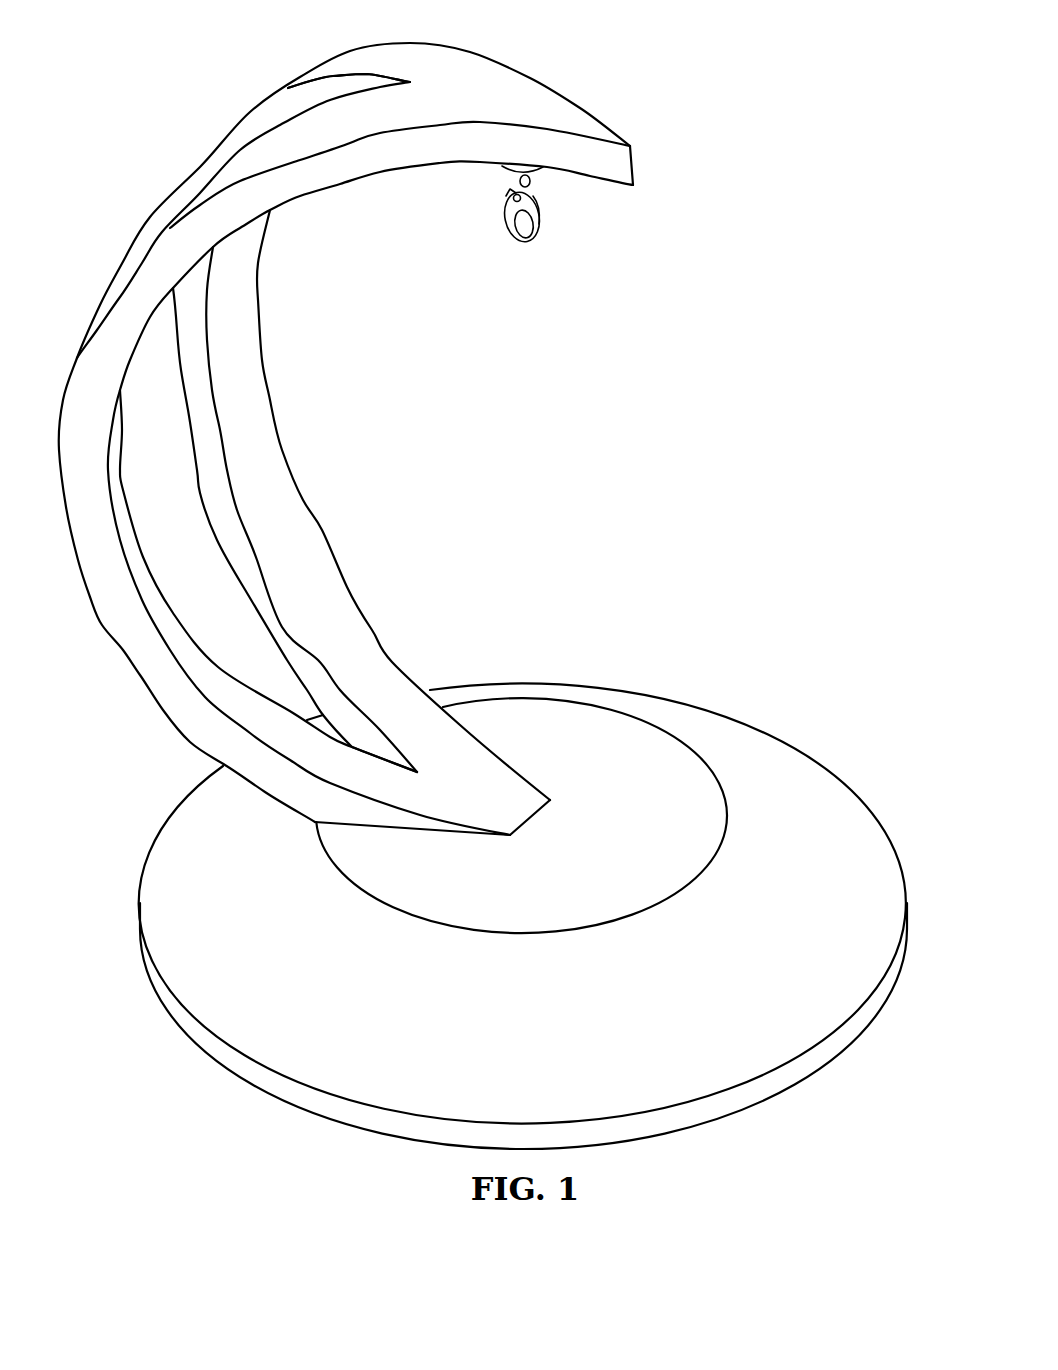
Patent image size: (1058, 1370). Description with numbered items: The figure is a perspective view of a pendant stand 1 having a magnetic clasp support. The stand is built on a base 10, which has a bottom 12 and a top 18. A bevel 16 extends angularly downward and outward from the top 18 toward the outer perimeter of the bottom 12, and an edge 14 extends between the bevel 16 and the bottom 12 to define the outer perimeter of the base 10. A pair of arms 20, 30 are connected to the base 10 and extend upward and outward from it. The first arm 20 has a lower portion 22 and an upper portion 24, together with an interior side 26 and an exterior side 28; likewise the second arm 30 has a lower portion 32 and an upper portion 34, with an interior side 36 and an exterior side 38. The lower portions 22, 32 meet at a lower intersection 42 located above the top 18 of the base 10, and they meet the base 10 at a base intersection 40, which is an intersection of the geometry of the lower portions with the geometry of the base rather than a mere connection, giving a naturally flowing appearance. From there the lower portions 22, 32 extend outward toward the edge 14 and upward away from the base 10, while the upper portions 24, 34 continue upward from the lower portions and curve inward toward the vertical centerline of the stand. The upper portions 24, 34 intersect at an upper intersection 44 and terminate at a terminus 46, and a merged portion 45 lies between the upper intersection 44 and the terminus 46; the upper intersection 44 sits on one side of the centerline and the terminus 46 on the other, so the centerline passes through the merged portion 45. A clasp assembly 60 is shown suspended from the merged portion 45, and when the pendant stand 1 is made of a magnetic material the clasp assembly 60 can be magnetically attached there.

The pendant stand 1 is at (640, 68).
The base 10 is at (806, 728).
The bottom 12 is at (778, 1112).
The edge 14 is at (320, 1100).
The bevel 16 is at (183, 838).
The top 18 is at (642, 748).
The arm 20 is at (302, 388).
The lower portion 22 is at (348, 592).
The upper portion 24 is at (270, 229).
The interior side 26 is at (253, 297).
The exterior side 28 is at (374, 56).
The arm 30 is at (94, 615).
The lower portion 32 is at (150, 700).
The upper portion 34 is at (164, 201).
The interior side 36 is at (160, 598).
The exterior side 38 is at (221, 162).
The base intersection 40 is at (410, 830).
The lower intersection 42 is at (417, 772).
The upper intersection 44 is at (411, 82).
The merged portion 45 is at (508, 89).
The terminus 46 is at (637, 168).
The clasp assembly 60 is at (560, 203).